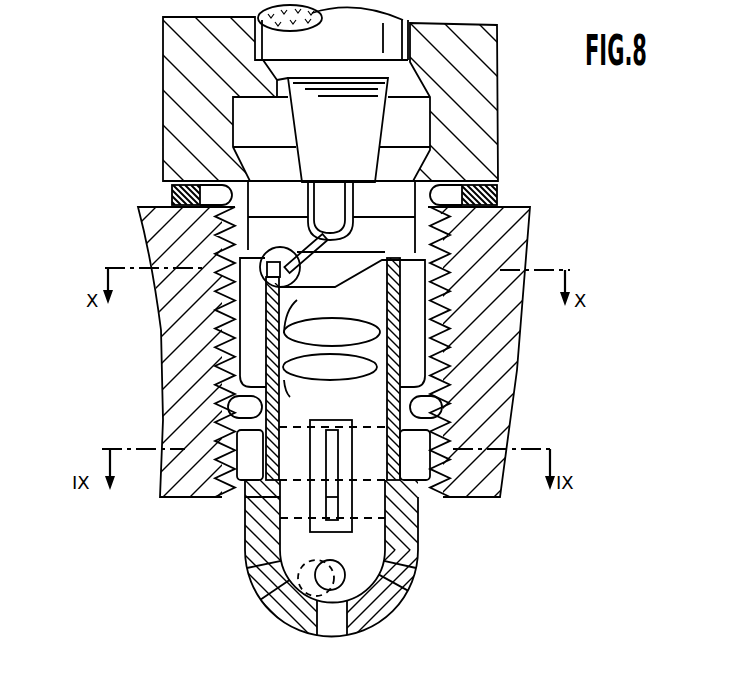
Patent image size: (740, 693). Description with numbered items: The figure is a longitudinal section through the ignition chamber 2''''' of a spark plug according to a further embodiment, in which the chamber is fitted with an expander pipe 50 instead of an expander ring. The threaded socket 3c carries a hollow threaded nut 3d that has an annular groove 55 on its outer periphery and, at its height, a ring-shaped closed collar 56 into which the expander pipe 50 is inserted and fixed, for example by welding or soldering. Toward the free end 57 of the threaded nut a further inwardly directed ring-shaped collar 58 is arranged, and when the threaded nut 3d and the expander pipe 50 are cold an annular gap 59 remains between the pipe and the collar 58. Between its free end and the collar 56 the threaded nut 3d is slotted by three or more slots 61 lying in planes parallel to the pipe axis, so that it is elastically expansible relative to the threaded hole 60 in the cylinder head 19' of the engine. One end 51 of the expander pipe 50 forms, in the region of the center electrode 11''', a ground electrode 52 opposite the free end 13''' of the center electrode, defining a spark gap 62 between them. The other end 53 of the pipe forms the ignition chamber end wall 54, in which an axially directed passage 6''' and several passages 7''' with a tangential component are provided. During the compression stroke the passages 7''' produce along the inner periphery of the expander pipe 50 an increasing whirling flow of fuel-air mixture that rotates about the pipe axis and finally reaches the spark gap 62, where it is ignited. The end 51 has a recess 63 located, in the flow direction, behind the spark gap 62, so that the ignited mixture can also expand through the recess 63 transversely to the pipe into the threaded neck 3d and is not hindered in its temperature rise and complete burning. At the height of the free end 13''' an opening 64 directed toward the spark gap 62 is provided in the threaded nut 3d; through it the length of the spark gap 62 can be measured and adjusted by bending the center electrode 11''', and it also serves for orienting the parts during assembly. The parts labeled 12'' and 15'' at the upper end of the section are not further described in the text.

The spray cup 12'' is at (260, 32).
The recess 63 is at (316, 290).
The threaded socket 3c is at (477, 110).
The ignition chamber 2''''' is at (410, 201).
The end of the expander pipe 51 is at (397, 242).
The cylinder head 19' is at (449, 352).
The conical nozzle 15'' is at (332, 130).
The center electrode 11''' is at (265, 153).
The free end of the center electrode 13''' is at (217, 215).
The opening 64 is at (262, 262).
The ground electrode 52 is at (266, 262).
The spark gap 62 is at (262, 272).
The ring-shaped closed collar 56 is at (268, 328).
The hollow threaded nut 3d is at (455, 343).
The annular groove 55 is at (240, 400).
The threaded hole 60 is at (437, 402).
The expander pipe 50 is at (460, 448).
The free end of the threaded nut 57 is at (243, 495).
The inwardly directed ring-shaped collar 58 is at (242, 518).
The annular gap 59 is at (245, 527).
The passages with tangential component 7''' is at (322, 588).
The slots 61 is at (348, 474).
The ignition chamber end wall 54 is at (280, 603).
The end of the expander pipe 53 is at (270, 632).
The axially directed passage 6''' is at (324, 616).